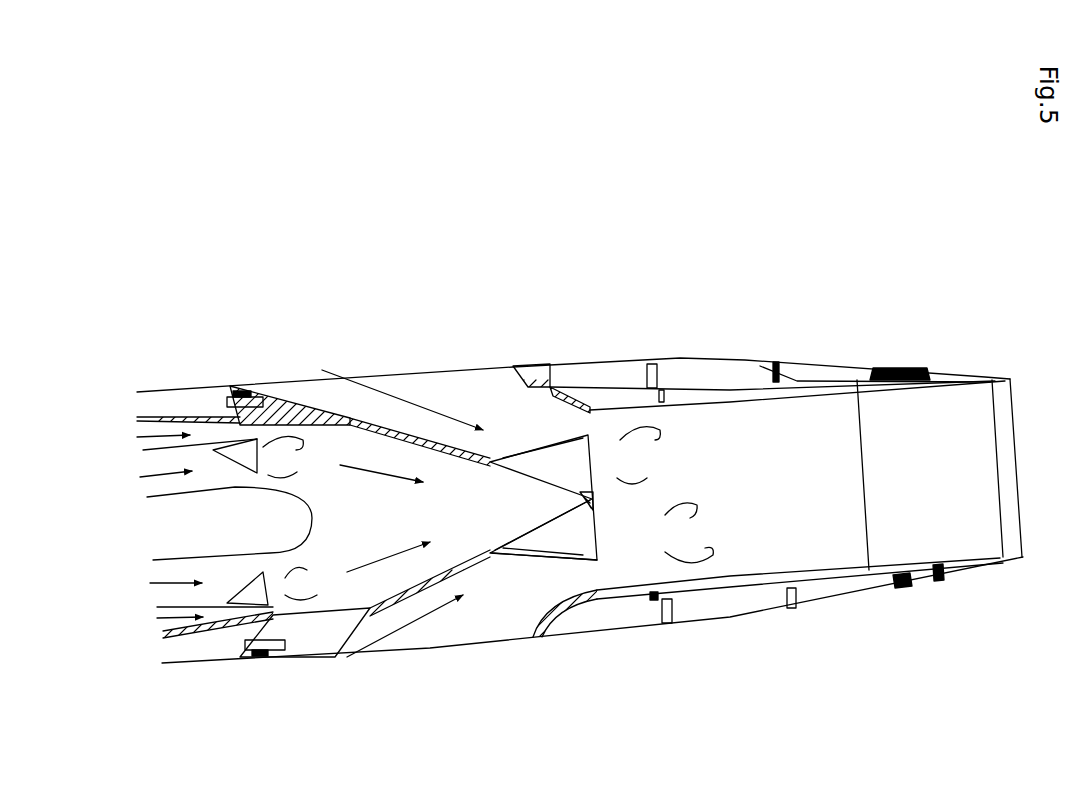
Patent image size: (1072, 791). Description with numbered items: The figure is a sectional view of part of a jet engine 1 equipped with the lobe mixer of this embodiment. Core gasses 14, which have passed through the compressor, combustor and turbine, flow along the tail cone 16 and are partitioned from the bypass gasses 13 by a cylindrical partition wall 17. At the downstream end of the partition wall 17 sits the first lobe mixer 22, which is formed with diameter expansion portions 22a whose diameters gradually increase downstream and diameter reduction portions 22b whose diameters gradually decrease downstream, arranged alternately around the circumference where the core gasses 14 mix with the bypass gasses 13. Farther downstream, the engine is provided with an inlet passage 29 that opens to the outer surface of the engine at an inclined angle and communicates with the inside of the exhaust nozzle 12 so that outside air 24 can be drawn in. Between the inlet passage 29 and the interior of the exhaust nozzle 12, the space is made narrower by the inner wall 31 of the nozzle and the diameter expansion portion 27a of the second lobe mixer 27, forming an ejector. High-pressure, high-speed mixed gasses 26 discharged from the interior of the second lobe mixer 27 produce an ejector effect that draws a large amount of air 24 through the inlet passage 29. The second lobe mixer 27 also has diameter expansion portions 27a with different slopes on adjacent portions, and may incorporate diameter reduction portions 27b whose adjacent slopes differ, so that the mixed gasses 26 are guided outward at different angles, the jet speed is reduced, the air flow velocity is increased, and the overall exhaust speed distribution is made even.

The jet engine 1 is at (140, 372).
The exhaust nozzle 12 is at (922, 370).
The bypass gasses 13 is at (146, 533).
The core gasses 14 is at (146, 533).
The tail cone 16 is at (303, 518).
The cylindrical partition wall 17 is at (190, 607).
The lobe mixer 22 is at (287, 613).
The diameter expansion portion 22a is at (240, 440).
The diameter reduction portion 22b is at (243, 470).
The air 24 is at (497, 407).
The mixed gasses 26 is at (607, 452).
The second lobe mixer 27 is at (610, 560).
The diameter expansion portion 27a is at (553, 558).
The diameter reduction portion 27b is at (585, 518).
The inlet passage 29 is at (513, 377).
The inner wall 31 is at (558, 390).